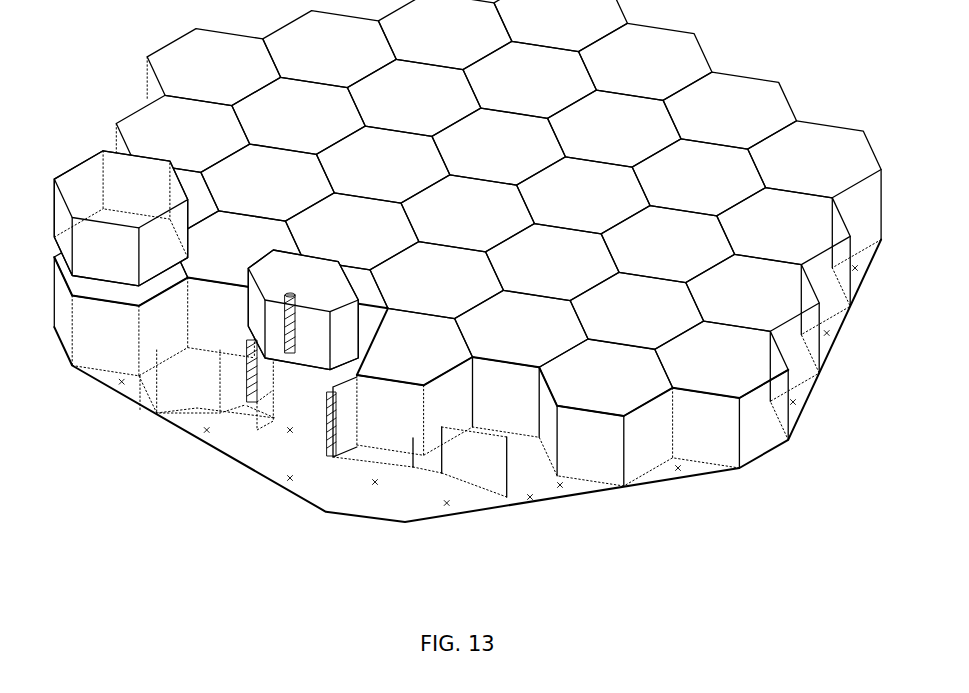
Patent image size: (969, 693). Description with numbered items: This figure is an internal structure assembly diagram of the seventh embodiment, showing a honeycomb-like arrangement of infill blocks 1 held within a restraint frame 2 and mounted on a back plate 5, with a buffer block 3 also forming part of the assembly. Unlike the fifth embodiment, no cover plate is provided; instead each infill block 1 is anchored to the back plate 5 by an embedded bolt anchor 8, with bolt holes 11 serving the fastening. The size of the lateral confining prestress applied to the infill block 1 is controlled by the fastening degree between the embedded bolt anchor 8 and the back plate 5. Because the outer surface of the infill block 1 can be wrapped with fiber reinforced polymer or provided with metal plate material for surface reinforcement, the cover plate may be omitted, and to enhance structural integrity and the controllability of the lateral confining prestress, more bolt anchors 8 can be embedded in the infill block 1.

The infill block 1 is at (108, 186).
The restraint frame 2 is at (430, 470).
The buffer block 3 is at (275, 419).
The back plate 5 is at (359, 491).
The bolt anchor 8 is at (290, 352).
The bolt holes 11 is at (273, 423).